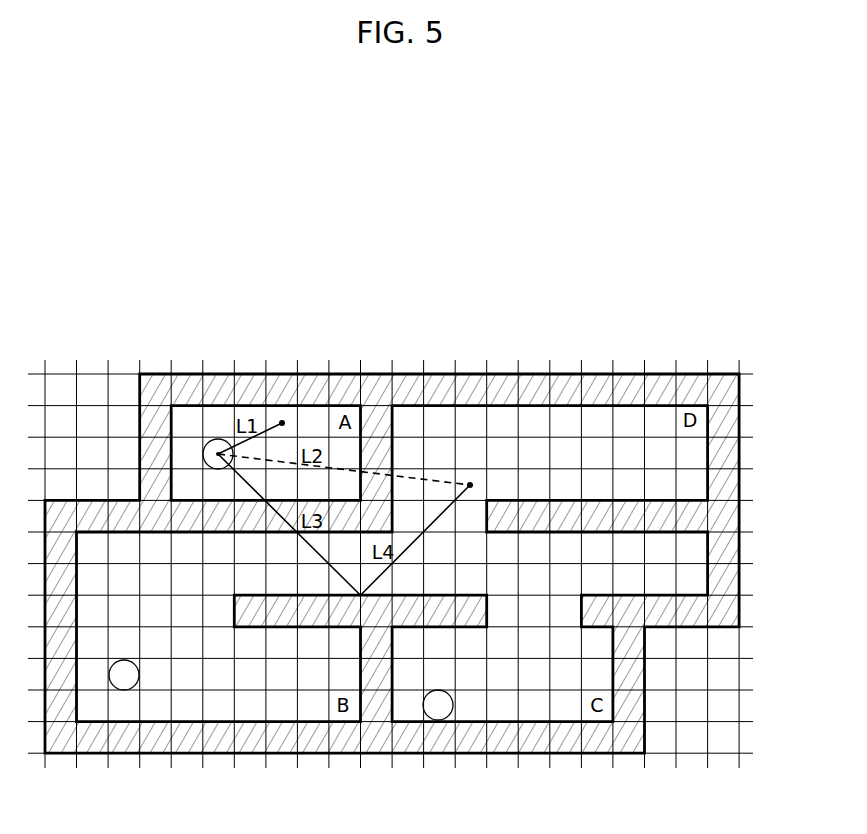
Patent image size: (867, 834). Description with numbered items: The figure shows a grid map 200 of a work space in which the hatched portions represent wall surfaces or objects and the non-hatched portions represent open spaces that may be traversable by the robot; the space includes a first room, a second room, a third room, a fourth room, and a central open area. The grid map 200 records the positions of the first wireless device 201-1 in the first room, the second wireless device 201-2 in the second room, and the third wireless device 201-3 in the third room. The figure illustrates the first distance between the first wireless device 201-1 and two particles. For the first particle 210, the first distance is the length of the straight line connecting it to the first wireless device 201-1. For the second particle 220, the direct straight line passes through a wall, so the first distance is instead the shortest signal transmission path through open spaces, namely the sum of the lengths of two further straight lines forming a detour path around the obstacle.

The grid map 200 is at (577, 303).
The wireless device #1 201-1 is at (216, 440).
The wireless device #2 201-2 is at (125, 689).
The wireless device #3 201-3 is at (440, 719).
The particle 210 is at (282, 420).
The particle 220 is at (470, 482).